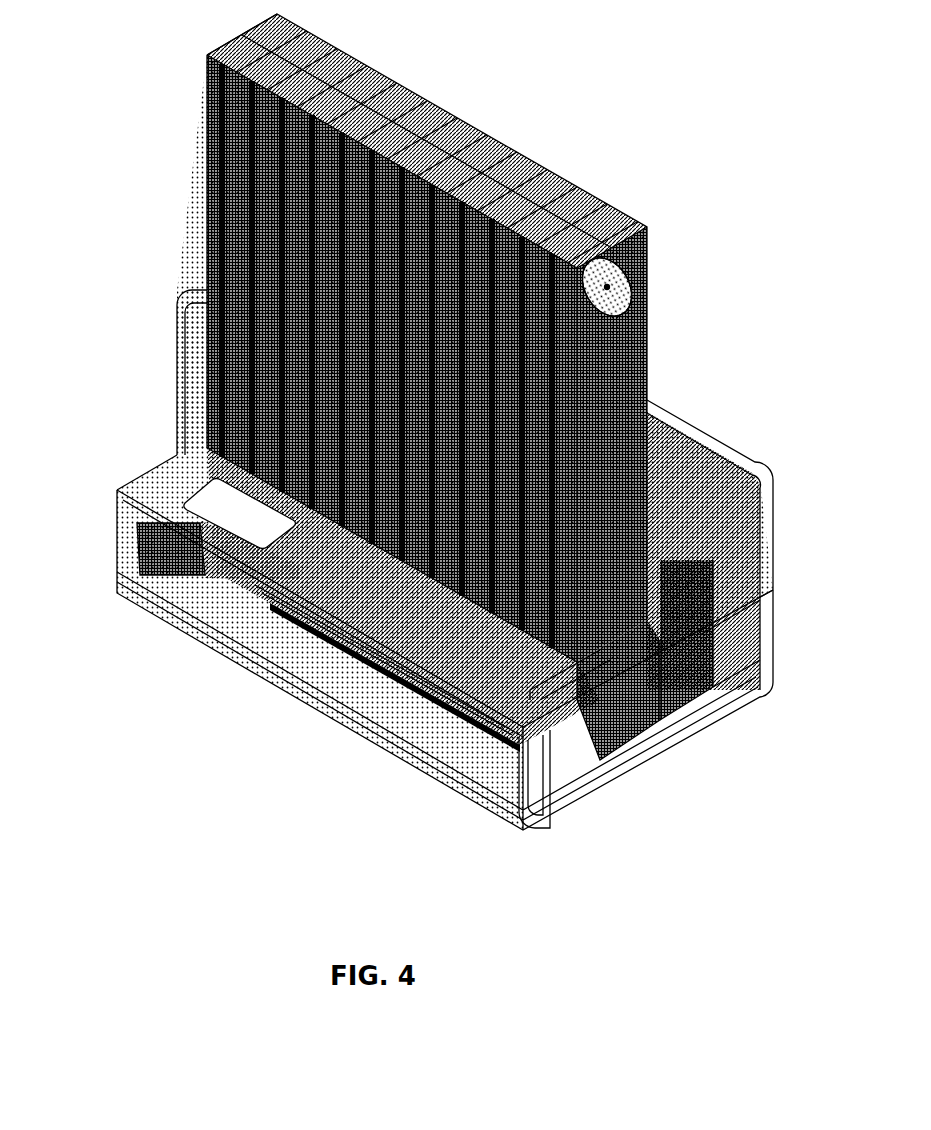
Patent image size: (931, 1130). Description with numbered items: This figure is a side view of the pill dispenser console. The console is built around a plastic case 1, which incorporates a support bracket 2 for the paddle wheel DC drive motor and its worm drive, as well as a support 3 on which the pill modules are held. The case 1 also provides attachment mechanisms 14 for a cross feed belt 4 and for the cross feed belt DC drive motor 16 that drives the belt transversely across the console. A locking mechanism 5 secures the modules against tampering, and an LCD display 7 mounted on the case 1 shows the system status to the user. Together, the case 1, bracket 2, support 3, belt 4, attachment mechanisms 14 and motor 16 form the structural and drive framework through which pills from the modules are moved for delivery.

The plastic case 1 is at (227, 610).
The support bracket 2 is at (693, 647).
The support for pill modules 3 is at (490, 615).
The cross feed belt 4 is at (663, 687).
The locking mechanism 5 is at (545, 622).
The LCD display 7 is at (140, 537).
The attachment mechanisms 14 is at (657, 743).
The cross feed belt DC drive motor 16 is at (543, 733).